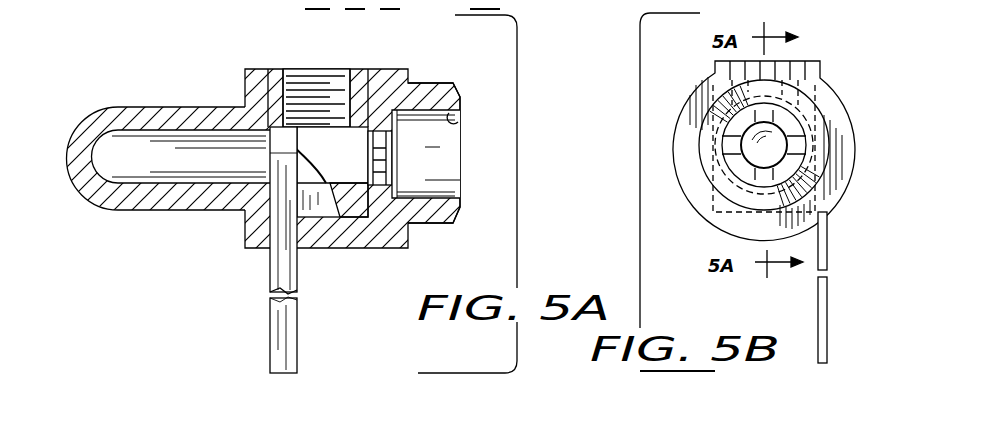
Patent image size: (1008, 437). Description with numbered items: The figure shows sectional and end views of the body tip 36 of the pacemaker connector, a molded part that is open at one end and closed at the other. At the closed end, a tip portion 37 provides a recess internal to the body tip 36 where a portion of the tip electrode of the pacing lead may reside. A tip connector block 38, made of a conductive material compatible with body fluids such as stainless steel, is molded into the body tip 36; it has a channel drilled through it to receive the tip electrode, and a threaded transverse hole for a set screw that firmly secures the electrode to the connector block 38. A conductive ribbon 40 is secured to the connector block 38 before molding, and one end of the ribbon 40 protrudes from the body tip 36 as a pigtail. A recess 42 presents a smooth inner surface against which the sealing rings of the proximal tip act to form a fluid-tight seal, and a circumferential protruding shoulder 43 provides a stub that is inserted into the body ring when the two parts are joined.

In FIG. 5A, the body tip 36 is at (286, 196).
In FIG. 5B, the body tip 36 is at (756, 130).
In FIG. 5A, the tip portion 37 is at (148, 106).
In FIG. 5A, the tip connector block 38 is at (360, 70).
In FIG. 5B, the tip connector block 38 is at (803, 63).
In FIG. 5A, the conductive ribbon 40 is at (272, 271).
In FIG. 5B, the conductive ribbon 40 is at (835, 250).
In FIG. 5A, the recess 42 is at (462, 118).
In FIG. 5A, the circumferential protruding shoulder 43 is at (440, 83).